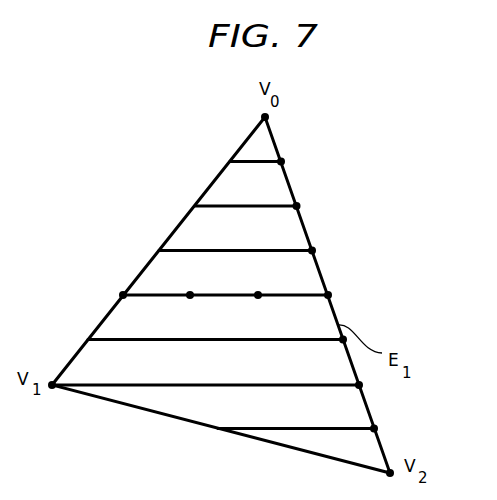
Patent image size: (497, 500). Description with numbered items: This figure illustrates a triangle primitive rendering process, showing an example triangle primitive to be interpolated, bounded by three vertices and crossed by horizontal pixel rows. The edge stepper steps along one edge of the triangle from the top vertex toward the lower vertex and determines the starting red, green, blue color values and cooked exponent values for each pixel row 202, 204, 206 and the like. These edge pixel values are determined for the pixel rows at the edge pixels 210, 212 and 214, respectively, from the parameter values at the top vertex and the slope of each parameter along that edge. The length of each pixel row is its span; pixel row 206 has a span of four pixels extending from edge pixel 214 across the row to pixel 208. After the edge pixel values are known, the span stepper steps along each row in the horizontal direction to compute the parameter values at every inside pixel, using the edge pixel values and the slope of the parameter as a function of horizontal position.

The pixel row 202 is at (232, 204).
The pixel row 204 is at (198, 248).
The pixel row 206 is at (165, 293).
The pixel 208 is at (121, 295).
The edge pixel 210 is at (298, 205).
The edge pixel 212 is at (314, 249).
The edge pixel 214 is at (329, 294).